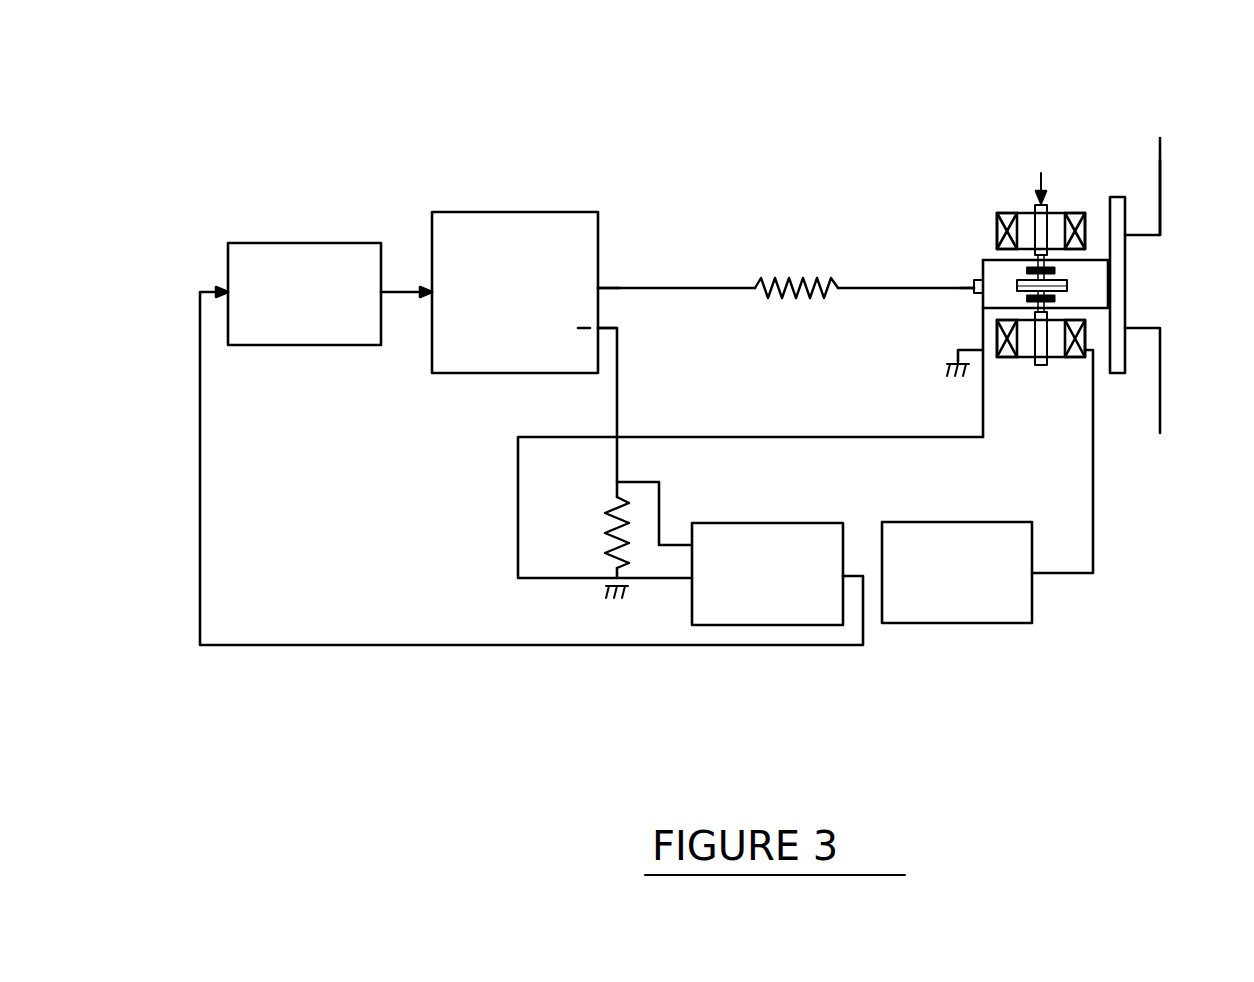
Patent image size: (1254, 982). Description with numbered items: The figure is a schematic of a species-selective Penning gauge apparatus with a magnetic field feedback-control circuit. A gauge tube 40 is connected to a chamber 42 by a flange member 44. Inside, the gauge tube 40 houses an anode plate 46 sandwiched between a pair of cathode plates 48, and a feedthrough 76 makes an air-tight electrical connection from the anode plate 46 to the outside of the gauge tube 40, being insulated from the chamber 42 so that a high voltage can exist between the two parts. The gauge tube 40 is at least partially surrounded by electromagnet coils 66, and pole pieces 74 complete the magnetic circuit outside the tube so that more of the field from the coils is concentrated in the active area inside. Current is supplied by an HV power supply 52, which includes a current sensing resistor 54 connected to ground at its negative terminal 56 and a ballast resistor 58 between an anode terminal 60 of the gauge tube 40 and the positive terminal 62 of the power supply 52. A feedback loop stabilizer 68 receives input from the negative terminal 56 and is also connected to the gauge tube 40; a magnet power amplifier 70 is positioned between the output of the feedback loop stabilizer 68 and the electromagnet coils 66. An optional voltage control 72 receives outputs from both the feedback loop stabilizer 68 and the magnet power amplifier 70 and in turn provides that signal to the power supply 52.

The gauge tube 40 is at (1090, 312).
The chamber 42 is at (1245, 296).
The flange member 44 is at (1128, 203).
The anode plate 46 is at (1017, 290).
The cathode plates 48 is at (1027, 268).
The HV power supply 52 is at (520, 295).
The current sensing resistor 54 is at (607, 545).
The negative terminal 56 is at (600, 325).
The ballast resistor 58 is at (805, 278).
The anode terminal 60 is at (960, 287).
The positive terminal 62 is at (600, 288).
The electromagnet coils 66 is at (995, 232).
The feedback loop stabilizer 68 is at (800, 591).
The magnet power amplifier 70 is at (985, 594).
The voltage control 72 is at (330, 311).
The pole pieces 74 is at (1044, 166).
The feedthrough 76 is at (1017, 288).